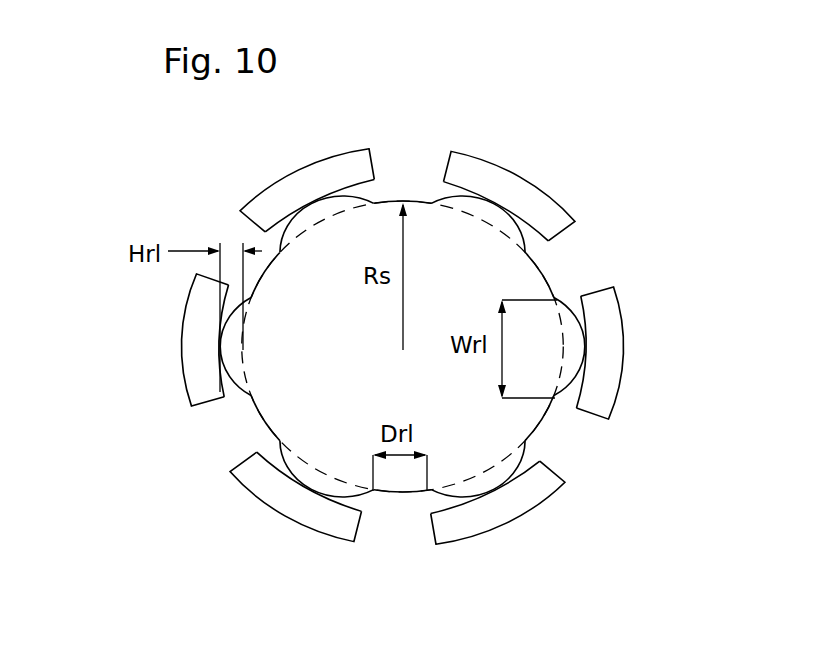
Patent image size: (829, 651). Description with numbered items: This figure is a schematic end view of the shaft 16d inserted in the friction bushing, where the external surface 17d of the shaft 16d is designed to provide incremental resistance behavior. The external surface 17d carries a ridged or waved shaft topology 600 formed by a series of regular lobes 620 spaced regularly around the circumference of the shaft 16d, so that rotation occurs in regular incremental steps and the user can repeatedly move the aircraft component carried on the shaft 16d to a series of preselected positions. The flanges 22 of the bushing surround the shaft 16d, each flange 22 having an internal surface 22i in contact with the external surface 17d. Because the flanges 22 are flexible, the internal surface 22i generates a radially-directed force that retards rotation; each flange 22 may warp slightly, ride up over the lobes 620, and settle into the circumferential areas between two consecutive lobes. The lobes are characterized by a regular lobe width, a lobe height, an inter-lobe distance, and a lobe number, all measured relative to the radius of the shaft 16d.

The shaft 16d is at (362, 338).
The external surface of the shaft 17d is at (543, 418).
The projecting portion (pole lobe) 620 is at (300, 478).
The flange 22 is at (315, 162).
The internal surface of the flange 22i is at (254, 208).
The shaft topology 600 is at (405, 186).